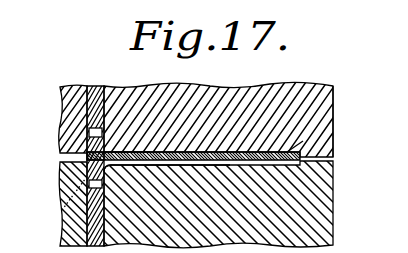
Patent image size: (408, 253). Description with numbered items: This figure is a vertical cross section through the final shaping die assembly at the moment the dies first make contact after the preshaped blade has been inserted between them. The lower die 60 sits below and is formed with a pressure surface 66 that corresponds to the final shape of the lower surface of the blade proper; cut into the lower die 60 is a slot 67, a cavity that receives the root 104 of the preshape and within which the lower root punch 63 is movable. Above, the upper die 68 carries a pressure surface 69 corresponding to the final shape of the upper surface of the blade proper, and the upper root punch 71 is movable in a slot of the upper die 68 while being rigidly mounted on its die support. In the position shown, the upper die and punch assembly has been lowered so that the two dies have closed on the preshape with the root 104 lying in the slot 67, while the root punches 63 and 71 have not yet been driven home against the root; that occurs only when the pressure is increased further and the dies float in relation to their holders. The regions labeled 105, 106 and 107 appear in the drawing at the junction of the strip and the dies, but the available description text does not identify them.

The lower die 60 is at (316, 210).
The root punch 63 is at (91, 208).
The pressure surface 66 is at (186, 170).
The slot 67 is at (86, 173).
The upper die 68 is at (312, 96).
The pressure surface 69 is at (332, 133).
The upper root punch 71 is at (64, 99).
The root 104 is at (100, 154).
The thin strip 105 is at (209, 152).
The rounded corner 106 is at (131, 171).
The bottom surface of upper body 107 is at (129, 148).